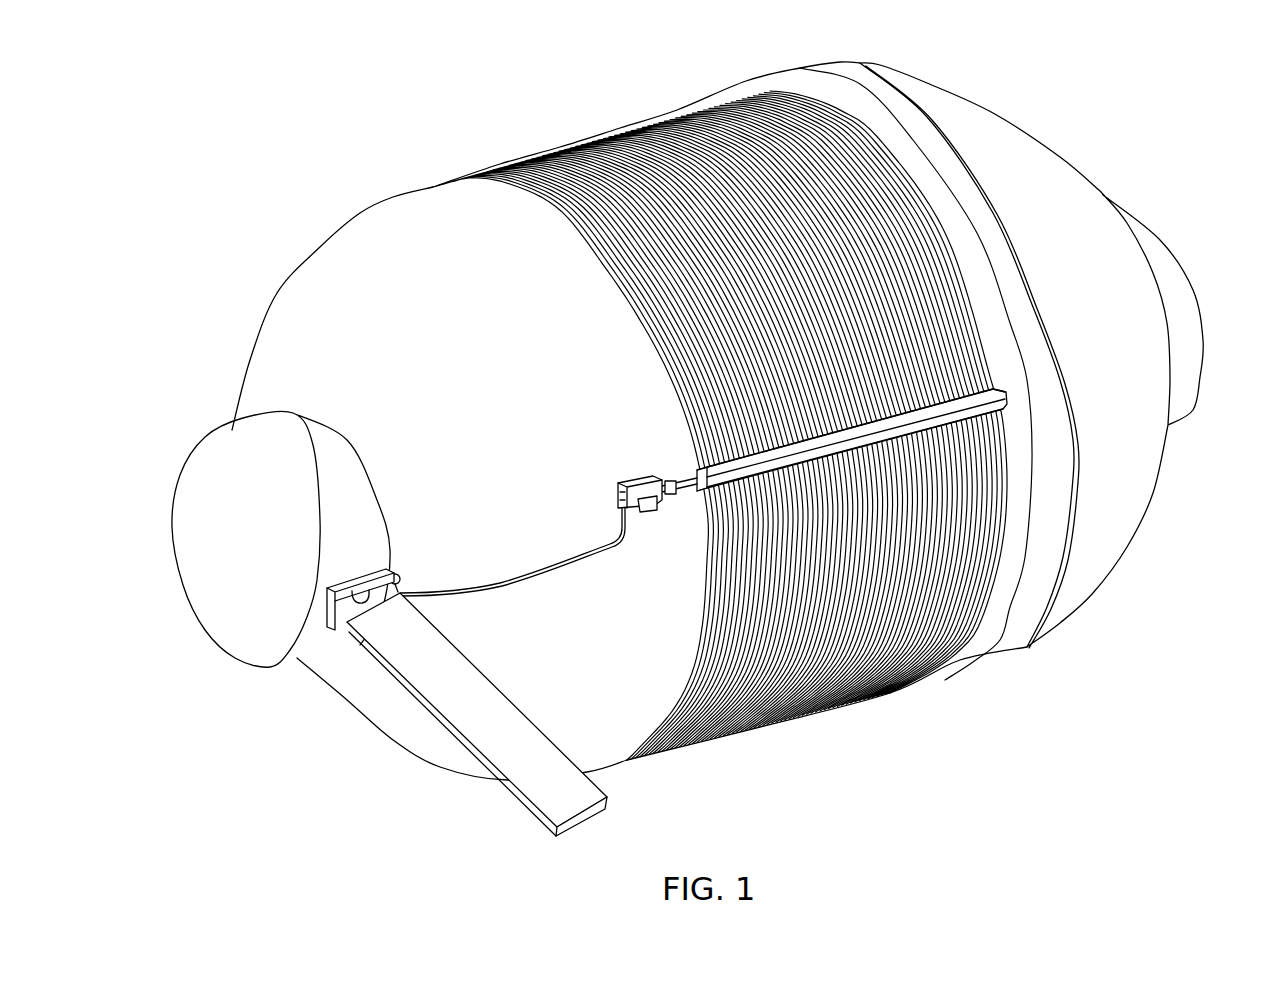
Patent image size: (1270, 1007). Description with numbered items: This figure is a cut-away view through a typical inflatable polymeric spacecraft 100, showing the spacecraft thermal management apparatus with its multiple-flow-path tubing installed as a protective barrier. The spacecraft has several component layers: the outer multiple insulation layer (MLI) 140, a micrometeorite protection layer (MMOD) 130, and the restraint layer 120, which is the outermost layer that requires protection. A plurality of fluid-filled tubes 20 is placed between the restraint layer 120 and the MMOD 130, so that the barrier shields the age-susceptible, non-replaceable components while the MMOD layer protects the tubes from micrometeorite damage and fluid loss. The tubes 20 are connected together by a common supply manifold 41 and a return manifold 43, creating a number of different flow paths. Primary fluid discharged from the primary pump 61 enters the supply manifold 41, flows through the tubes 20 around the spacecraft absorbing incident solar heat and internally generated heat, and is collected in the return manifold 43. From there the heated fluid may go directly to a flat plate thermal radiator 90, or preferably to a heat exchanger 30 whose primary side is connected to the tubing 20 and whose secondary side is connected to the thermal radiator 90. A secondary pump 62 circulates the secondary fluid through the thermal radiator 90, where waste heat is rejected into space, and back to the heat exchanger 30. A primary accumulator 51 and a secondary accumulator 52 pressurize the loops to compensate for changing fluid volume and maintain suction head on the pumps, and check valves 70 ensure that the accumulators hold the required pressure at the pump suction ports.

The inflatable spacecraft 100 is at (426, 123).
The tube 20 is at (713, 737).
The restraint layer 120 is at (360, 245).
The micrometeorite protection layer (MMOD) 130 is at (967, 640).
The multiple insulation layer (MLI) 140 is at (1075, 390).
The heat exchanger 30 is at (630, 479).
The primary accumulator 51 is at (655, 506).
The secondary accumulator 52 is at (403, 576).
The primary pump 61 is at (667, 481).
The secondary pump 62 is at (342, 612).
The check valve 70 is at (683, 478).
The supply manifold 41 is at (1008, 400).
The return manifold 43 is at (1003, 408).
The flat plate thermal radiator 90 is at (513, 713).